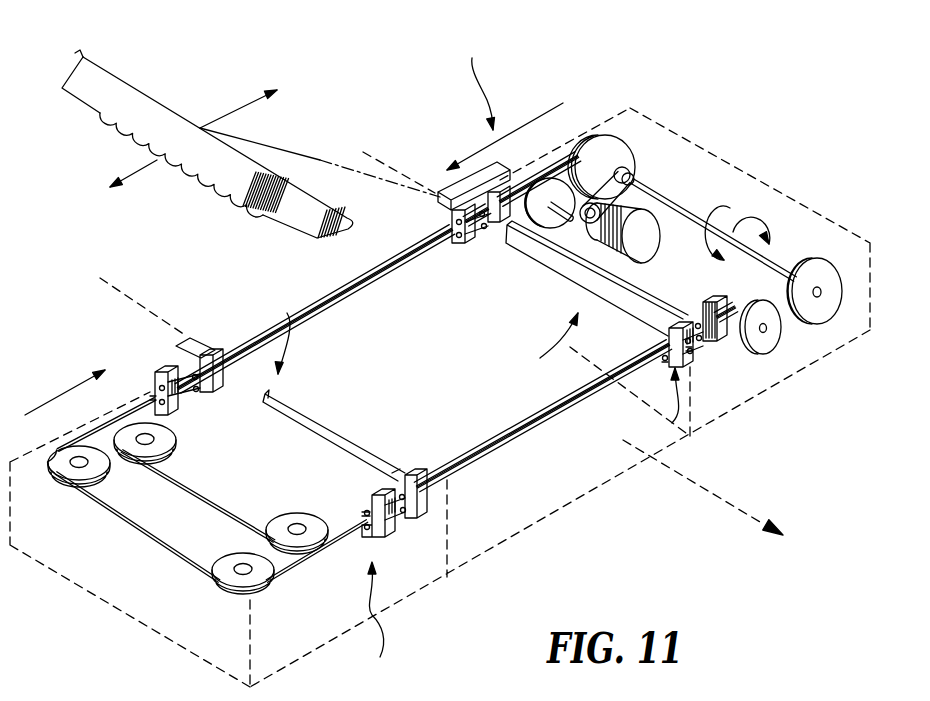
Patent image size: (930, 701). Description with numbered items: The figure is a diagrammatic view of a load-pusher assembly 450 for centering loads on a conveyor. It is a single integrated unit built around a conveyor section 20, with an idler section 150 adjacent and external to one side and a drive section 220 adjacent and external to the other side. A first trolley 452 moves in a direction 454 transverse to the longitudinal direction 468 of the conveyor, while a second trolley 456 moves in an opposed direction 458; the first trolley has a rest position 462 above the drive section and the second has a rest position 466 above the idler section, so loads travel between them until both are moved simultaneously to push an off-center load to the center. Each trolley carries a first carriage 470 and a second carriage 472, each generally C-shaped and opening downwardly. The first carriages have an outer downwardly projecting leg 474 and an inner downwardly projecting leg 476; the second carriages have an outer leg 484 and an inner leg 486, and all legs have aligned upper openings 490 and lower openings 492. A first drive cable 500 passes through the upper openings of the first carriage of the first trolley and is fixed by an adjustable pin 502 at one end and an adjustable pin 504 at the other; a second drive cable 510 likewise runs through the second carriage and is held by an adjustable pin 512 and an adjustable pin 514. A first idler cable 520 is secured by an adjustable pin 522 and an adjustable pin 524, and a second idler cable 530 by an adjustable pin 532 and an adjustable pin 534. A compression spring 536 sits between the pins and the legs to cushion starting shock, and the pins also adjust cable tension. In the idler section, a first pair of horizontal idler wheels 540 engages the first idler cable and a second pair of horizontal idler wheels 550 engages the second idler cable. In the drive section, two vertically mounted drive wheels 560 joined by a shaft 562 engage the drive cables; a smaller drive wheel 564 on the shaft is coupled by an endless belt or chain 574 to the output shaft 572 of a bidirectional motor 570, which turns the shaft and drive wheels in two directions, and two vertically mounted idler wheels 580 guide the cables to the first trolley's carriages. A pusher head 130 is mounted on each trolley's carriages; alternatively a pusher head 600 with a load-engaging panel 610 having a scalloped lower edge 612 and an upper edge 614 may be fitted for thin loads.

The conveyor section 20 is at (392, 386).
The pusher head 130 is at (566, 268).
The idler section 150 is at (266, 491).
The drive section 220 is at (650, 291).
The load-pusher assembly 450 is at (474, 83).
The first trolley 452 is at (541, 344).
The direction 454 is at (527, 124).
The second trolley 456 is at (275, 333).
The direction 458 is at (72, 384).
The rest position 462 is at (405, 172).
The rest position 466 is at (143, 303).
The longitudinal direction 468 is at (728, 498).
The first carriage 470 is at (523, 523).
The second carriage 472 is at (502, 175).
The outer downwardly projecting leg 474 is at (700, 345).
The inner downwardly projecting leg 476 is at (681, 357).
The outer downwardly projecting leg 484 is at (493, 228).
The inner downwardly projecting leg 486 is at (484, 230).
The upper openings 490 is at (455, 226).
The lower openings 492 is at (197, 392).
The first drive cable 500 is at (541, 417).
The adjustable pin 502 is at (688, 350).
The adjustable pin 504 is at (393, 473).
The second drive cable 510 is at (307, 310).
The adjustable pin 512 is at (470, 235).
The adjustable pin 514 is at (163, 360).
The first idler cable 520 is at (242, 527).
The adjustable pin 522 is at (366, 513).
The adjustable pin 524 is at (465, 238).
The second idler cable 530 is at (148, 540).
The adjustable pin 532 is at (672, 363).
The adjustable pin 534 is at (156, 397).
The compression spring 536 is at (467, 245).
The horizontal idler wheels 540 is at (165, 440).
The horizontal idler wheels 550 is at (103, 470).
The drive wheels 560 is at (625, 148).
The shaft 562 is at (703, 223).
The smaller drive wheel 564 is at (634, 178).
The bidirectional motor 570 is at (645, 246).
The output shaft 572 is at (575, 236).
The drive belt 574 is at (632, 204).
The idler wheels 580 is at (556, 182).
The pusher head 600 is at (168, 102).
The load-engaging panel 610 is at (310, 217).
The scalloped lower edge 612 is at (213, 187).
The upper edge 614 is at (345, 165).